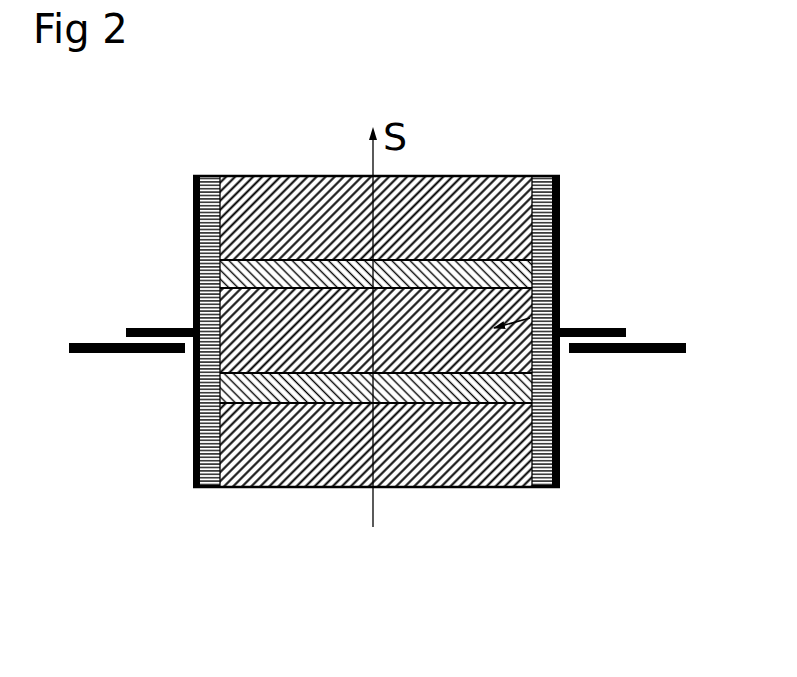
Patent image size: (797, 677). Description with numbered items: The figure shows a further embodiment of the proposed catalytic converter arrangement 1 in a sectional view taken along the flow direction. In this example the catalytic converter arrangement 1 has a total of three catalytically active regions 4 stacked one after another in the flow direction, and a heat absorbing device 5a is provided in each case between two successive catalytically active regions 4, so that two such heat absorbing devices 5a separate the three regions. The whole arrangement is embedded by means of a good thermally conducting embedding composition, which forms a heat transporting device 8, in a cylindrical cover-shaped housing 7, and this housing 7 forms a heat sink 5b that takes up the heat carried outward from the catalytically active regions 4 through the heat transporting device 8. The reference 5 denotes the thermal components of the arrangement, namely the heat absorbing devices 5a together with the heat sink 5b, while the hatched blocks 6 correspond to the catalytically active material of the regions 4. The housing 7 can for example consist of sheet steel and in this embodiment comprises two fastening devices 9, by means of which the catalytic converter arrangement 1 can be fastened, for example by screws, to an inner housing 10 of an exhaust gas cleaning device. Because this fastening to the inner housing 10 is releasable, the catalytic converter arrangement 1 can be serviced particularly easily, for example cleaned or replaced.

The catalytic converter arrangement 1 is at (191, 175).
The catalytically active region 4 is at (500, 155).
The layer stack 5 is at (178, 402).
The heat absorbing device 5a is at (561, 262).
The heat sink 5b is at (558, 176).
The piezoelectric layer 6 is at (279, 178).
The housing 7 is at (561, 213).
The heat transporting device 8 is at (213, 470).
The fastening device 9 is at (143, 329).
The inner housing 10 is at (77, 342).